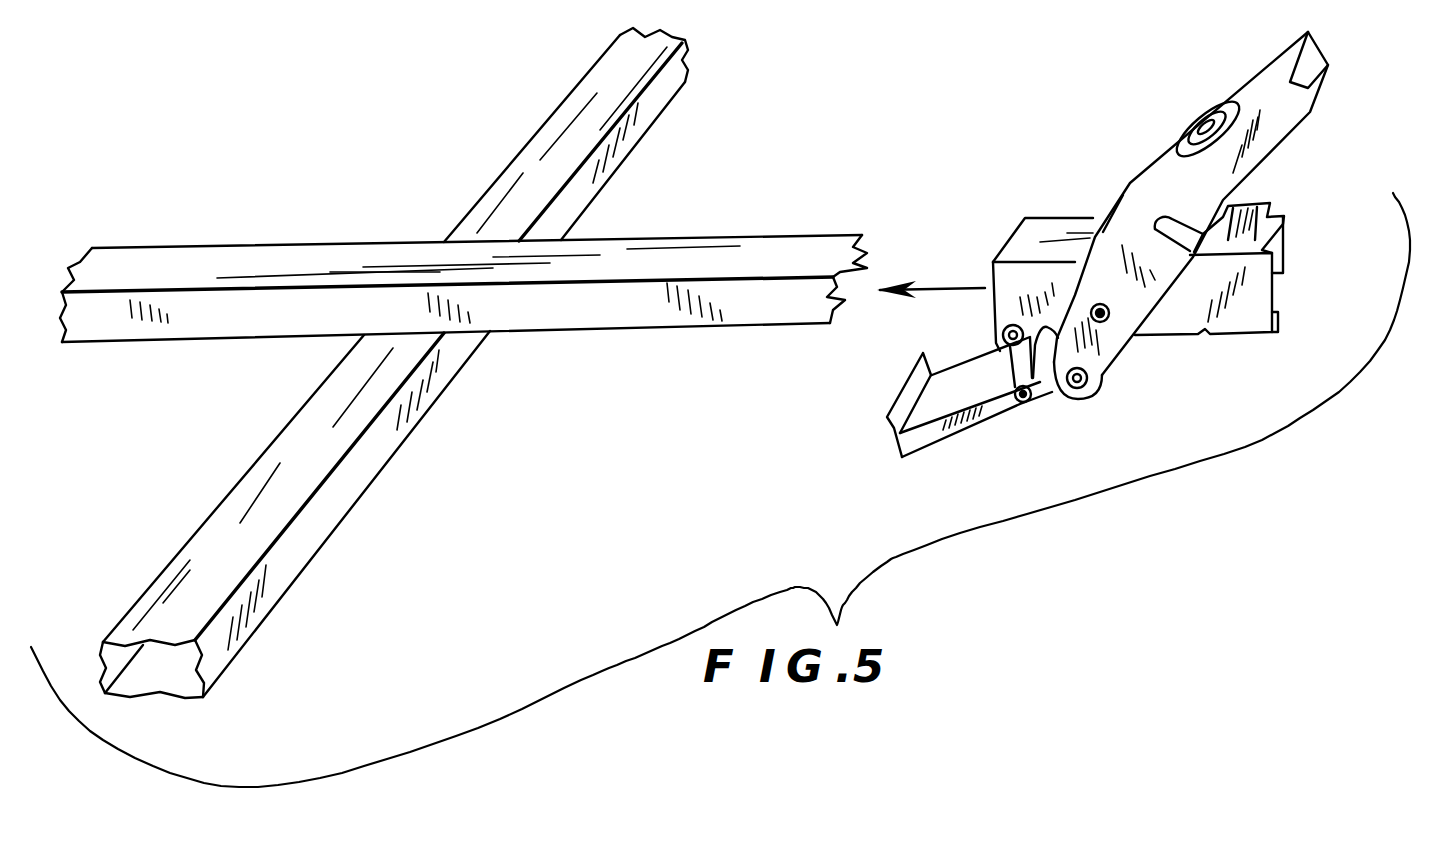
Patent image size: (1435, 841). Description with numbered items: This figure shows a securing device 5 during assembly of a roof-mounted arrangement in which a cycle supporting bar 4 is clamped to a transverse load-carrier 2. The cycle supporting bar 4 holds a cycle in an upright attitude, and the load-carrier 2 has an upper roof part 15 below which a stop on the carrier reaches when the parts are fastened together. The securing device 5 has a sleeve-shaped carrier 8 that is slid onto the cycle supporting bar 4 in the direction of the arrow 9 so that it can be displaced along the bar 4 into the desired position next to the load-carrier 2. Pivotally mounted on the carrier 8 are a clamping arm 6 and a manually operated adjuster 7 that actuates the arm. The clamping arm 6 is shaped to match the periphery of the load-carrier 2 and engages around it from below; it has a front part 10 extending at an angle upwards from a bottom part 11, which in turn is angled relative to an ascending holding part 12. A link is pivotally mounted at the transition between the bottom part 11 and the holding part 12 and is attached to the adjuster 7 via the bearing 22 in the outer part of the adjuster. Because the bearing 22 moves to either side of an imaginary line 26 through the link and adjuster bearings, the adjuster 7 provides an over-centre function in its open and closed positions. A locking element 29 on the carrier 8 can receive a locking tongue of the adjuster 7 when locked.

The load-carrier 2 is at (280, 419).
The cycle supporting bar 4 is at (325, 238).
The securing device 5 is at (1105, 162).
The clamping arm 6 is at (955, 452).
The manually operated adjuster 7 is at (1258, 87).
The sleeve-shaped carrier 8 is at (1223, 320).
The arrow 9 is at (950, 287).
The front part 10 is at (887, 428).
The bottom part 11 is at (923, 437).
The holding part 12 is at (1020, 367).
The upper roof part 15 is at (541, 165).
The bearing 22 is at (1088, 381).
The imaginary line 26 is at (1102, 336).
The locking element 29 is at (1257, 247).